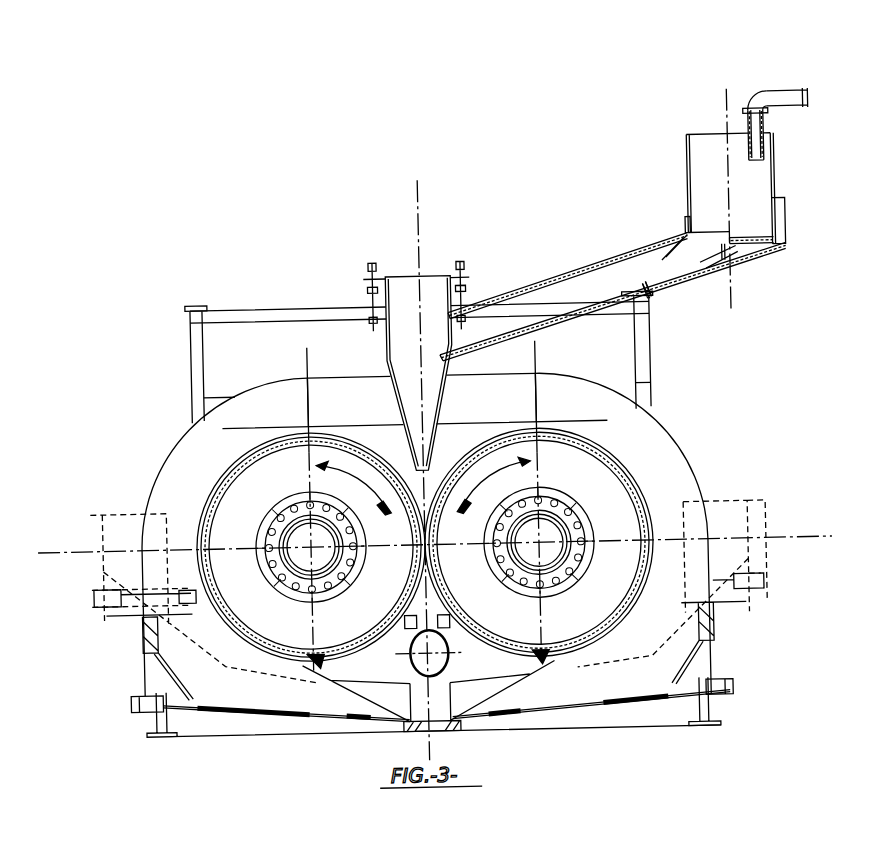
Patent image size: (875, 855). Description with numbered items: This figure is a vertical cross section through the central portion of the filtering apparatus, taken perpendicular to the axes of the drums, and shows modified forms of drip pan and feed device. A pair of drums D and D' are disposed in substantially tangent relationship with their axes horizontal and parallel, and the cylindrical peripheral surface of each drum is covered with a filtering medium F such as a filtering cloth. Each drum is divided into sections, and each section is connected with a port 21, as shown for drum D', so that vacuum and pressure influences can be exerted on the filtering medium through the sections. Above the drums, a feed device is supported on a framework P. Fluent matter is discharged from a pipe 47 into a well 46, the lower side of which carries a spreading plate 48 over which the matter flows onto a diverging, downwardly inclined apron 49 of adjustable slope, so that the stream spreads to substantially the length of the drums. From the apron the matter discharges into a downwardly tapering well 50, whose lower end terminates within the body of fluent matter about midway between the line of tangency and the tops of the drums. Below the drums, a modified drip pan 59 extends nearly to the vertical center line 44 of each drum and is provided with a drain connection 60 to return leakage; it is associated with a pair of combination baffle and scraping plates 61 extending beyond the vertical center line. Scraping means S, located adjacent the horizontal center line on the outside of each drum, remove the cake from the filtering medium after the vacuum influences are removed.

The framework P is at (194, 332).
The downwardly tapering well 50 is at (392, 347).
The apron 49 is at (679, 285).
The well 46 is at (763, 189).
The pipe 47 is at (815, 98).
The spreading plate 48 is at (726, 262).
The drum D is at (273, 548).
The drum D' is at (577, 541).
The port 21 is at (564, 520).
The filtering medium F is at (277, 437).
The scraping means S is at (193, 558).
The vertical center line 44 is at (313, 618).
The combination baffle and scraping plates 61 is at (311, 659).
The drip pan 59 is at (480, 706).
The drain connection 60 is at (409, 727).